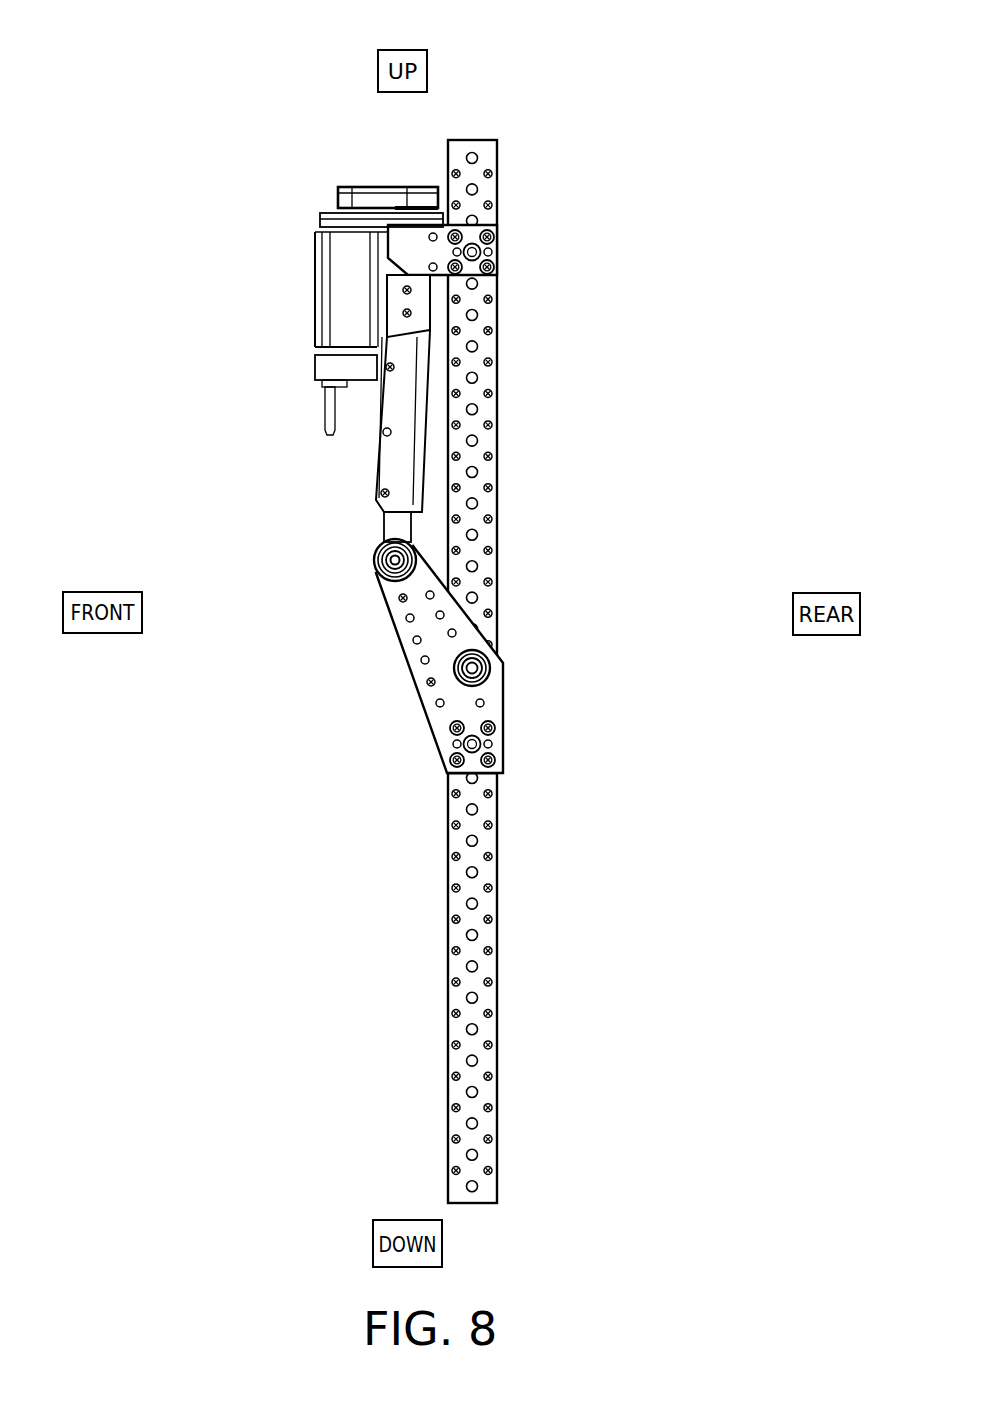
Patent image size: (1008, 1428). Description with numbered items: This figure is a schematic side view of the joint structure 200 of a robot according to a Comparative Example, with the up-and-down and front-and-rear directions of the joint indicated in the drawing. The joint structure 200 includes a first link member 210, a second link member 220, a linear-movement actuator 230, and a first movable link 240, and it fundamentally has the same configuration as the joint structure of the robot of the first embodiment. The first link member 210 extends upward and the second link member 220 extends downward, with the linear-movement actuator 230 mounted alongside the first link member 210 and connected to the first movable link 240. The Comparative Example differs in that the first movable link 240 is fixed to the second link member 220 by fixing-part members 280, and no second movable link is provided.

The joint structure 200 is at (424, 28).
The first link member 210 is at (517, 384).
The second link member 220 is at (517, 950).
The linear-movement actuator 230 is at (299, 236).
The first movable link 240 is at (537, 660).
The fixing-part members 280 is at (503, 762).